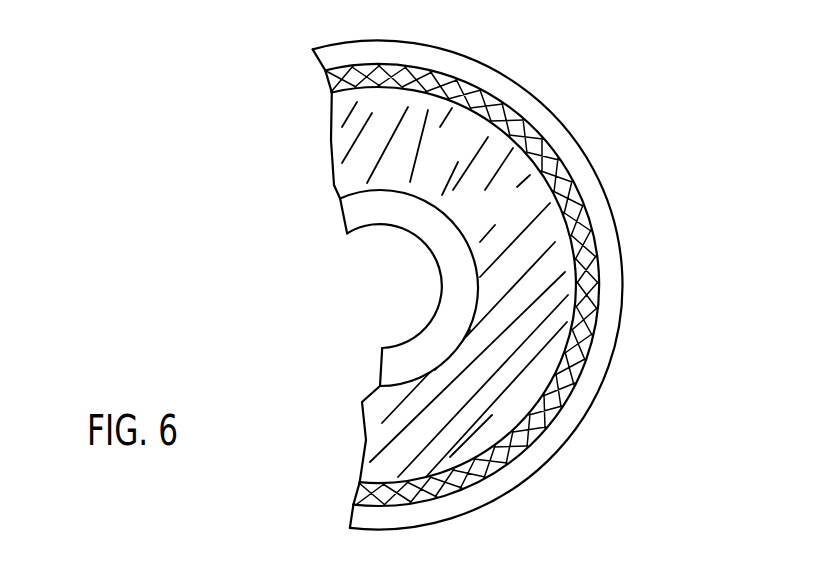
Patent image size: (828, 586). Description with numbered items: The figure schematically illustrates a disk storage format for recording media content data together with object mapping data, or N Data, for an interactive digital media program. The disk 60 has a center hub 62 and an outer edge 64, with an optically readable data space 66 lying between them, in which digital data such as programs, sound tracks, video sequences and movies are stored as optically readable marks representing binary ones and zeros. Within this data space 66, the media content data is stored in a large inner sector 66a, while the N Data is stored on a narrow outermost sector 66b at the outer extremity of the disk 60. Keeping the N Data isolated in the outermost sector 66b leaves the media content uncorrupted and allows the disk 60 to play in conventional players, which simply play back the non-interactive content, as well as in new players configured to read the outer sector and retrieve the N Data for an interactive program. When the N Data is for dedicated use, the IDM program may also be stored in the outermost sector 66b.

The disk 60 is at (290, 140).
The center hub 62 is at (408, 362).
The outer edge 64 is at (565, 447).
The optically readable data space 66 is at (503, 89).
The inner sector 66a is at (449, 288).
The outermost sector 66b is at (551, 160).